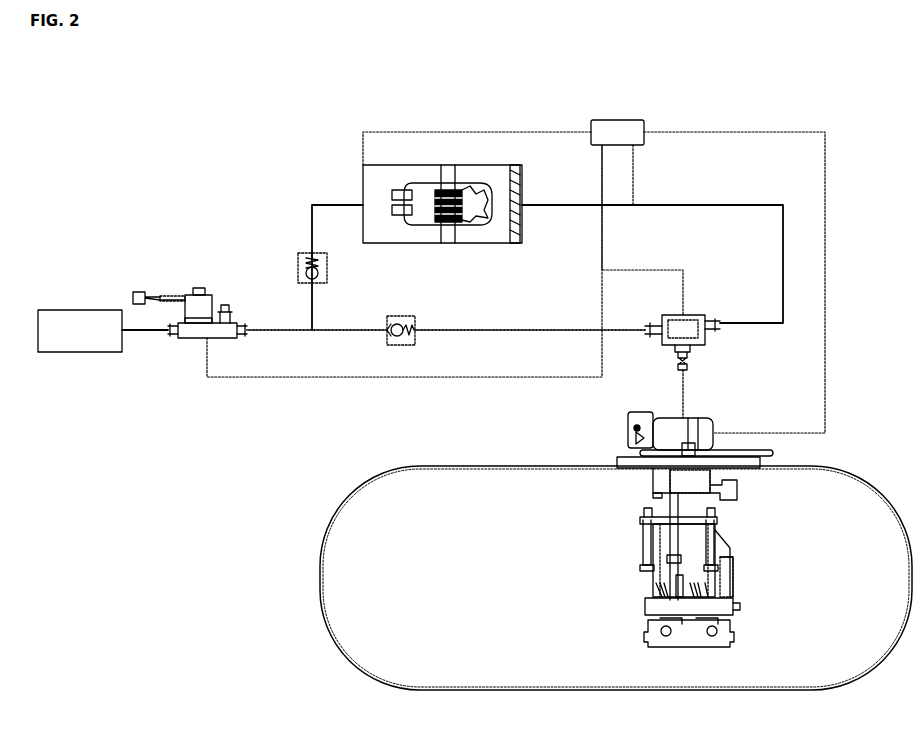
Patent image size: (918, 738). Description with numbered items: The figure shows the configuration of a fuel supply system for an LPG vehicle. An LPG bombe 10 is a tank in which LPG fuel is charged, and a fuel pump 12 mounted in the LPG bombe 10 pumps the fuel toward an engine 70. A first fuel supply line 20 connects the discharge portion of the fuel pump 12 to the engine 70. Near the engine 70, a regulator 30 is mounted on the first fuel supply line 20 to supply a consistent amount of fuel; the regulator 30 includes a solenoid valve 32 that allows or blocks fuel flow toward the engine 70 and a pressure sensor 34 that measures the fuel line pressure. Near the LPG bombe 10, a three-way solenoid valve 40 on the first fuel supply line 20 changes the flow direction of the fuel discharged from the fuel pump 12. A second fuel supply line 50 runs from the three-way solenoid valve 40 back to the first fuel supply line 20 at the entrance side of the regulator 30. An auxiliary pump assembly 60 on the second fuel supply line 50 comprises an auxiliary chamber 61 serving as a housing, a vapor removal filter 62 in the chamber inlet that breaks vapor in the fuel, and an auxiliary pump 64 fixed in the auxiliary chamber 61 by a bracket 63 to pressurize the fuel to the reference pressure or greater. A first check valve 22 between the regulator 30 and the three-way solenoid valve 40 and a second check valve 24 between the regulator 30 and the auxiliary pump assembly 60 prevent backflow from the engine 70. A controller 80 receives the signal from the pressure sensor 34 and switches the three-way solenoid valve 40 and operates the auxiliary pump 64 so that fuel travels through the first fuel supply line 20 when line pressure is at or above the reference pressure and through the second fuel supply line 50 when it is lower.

The LPG bombe 10 is at (324, 552).
The fuel pump 12 is at (647, 545).
The first fuel supply line 20 is at (500, 328).
The first check valve 22 is at (406, 316).
The second check valve 24 is at (298, 258).
The regulator 30 is at (188, 344).
The solenoid valve 32 is at (196, 290).
The pressure sensor 34 is at (225, 305).
The 3-way solenoid valve 40 is at (690, 315).
The second fuel supply line 50 is at (783, 240).
The auxiliary pump assembly 60 is at (360, 170).
The auxiliary chamber 61 is at (487, 165).
The vapor removal filter 62 is at (520, 176).
The bracket 63 is at (450, 165).
The auxiliary pump 64 is at (441, 190).
The engine 70 is at (68, 310).
The controller 80 is at (617, 120).